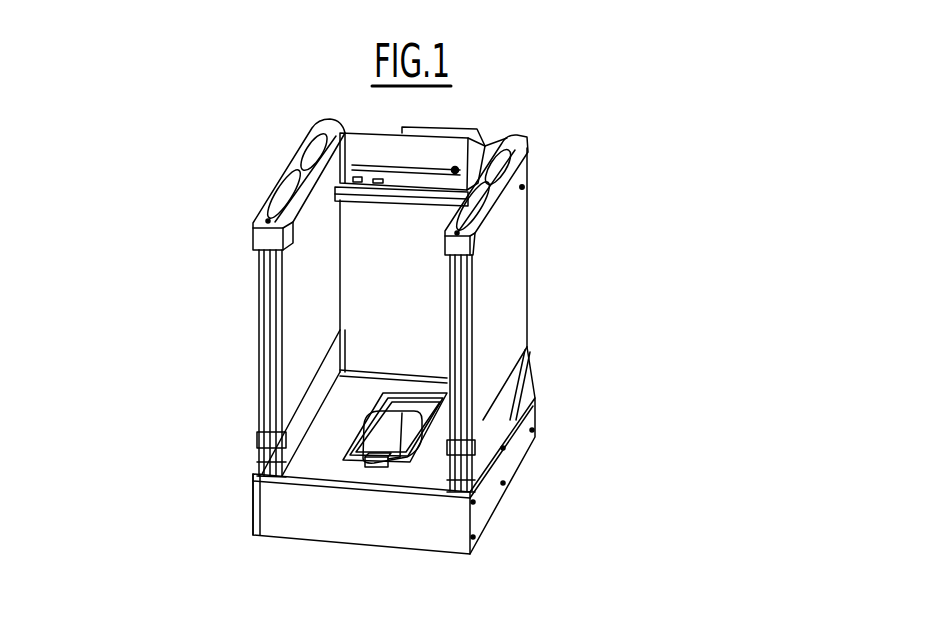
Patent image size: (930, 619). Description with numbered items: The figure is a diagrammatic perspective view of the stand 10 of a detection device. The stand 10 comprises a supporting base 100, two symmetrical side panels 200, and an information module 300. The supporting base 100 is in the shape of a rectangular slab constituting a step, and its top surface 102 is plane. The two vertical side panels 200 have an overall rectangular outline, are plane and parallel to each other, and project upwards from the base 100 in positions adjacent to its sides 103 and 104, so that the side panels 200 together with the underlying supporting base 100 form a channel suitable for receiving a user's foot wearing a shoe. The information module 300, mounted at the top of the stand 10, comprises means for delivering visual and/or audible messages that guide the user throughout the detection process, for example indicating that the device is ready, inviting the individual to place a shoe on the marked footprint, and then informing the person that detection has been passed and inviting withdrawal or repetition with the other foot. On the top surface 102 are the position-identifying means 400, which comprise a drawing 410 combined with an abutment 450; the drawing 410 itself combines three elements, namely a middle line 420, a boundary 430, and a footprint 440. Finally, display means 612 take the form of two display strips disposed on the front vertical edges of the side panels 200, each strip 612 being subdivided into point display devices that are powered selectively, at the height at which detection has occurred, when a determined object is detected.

The stand 10 is at (229, 352).
The supporting base 100 is at (430, 472).
The top surface 102 is at (323, 443).
The side of the supporting base 103 is at (230, 511).
The side of the supporting base 104 is at (507, 465).
The side panel 200 is at (293, 280).
The information module 300 is at (458, 114).
The position-identifying means 400 is at (328, 477).
The drawing 410 is at (438, 435).
The middle line 420 is at (377, 467).
The boundary 430 is at (364, 420).
The footprint 440 is at (402, 413).
The abutment 450 is at (367, 470).
The display means 612 is at (267, 370).